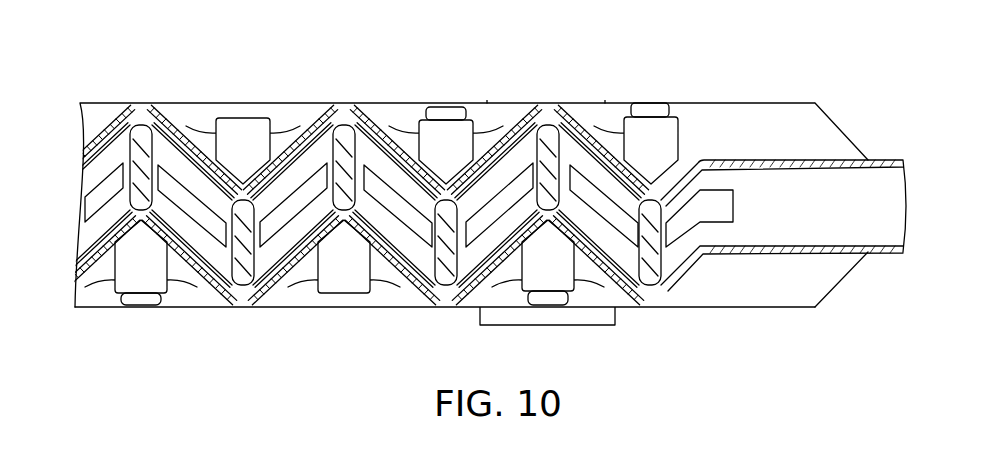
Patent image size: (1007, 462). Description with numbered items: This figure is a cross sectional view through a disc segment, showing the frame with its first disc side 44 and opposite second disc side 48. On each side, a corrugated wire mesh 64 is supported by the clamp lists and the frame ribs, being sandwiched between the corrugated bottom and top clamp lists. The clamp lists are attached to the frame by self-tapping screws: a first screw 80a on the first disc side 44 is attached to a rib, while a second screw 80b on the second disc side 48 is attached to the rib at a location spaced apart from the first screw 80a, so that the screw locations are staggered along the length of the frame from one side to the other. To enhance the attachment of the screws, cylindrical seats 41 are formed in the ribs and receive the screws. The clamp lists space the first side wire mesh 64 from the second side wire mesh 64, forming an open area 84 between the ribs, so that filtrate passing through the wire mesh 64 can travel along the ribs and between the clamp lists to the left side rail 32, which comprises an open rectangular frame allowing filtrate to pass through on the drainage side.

The left side rail 32 is at (744, 293).
The cylindrical seat 41 is at (652, 141).
The first disc side 44 is at (300, 96).
The second disc side 48 is at (363, 307).
The corrugated wire mesh 64 is at (385, 110).
The first screw 80a is at (444, 105).
The second screw 80b is at (548, 302).
The open area 84 is at (289, 214).